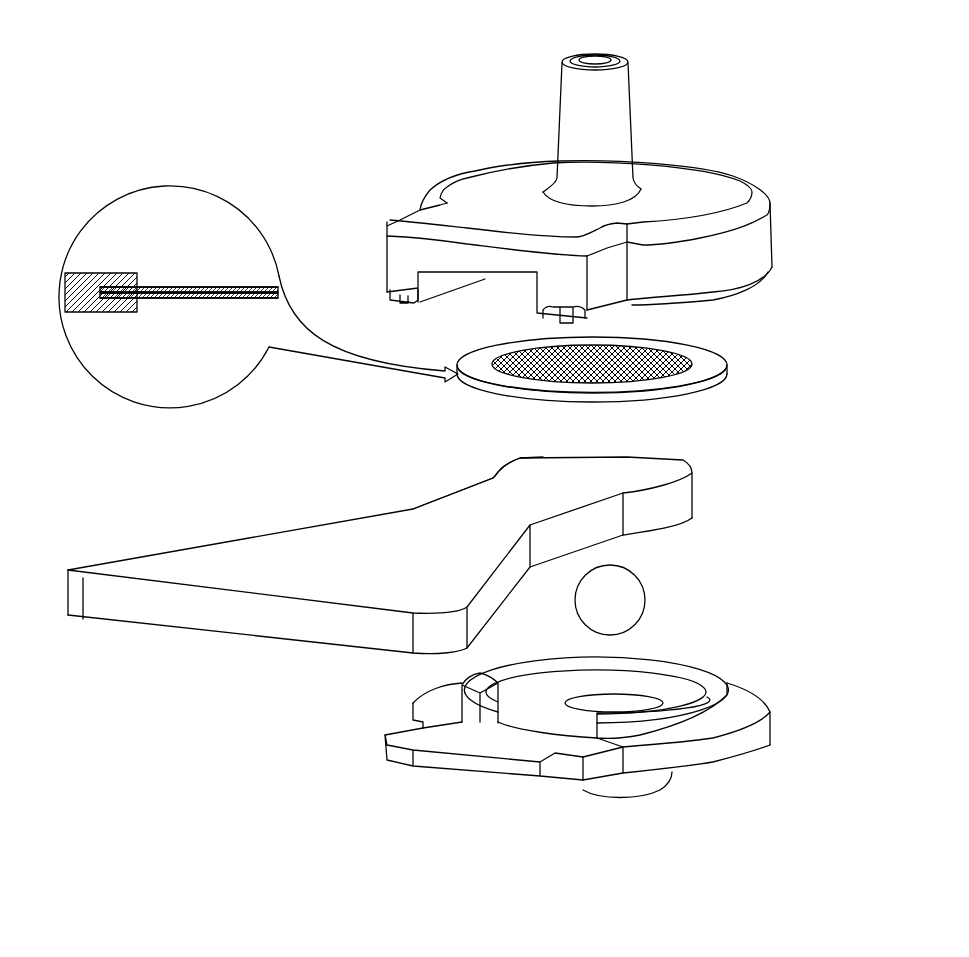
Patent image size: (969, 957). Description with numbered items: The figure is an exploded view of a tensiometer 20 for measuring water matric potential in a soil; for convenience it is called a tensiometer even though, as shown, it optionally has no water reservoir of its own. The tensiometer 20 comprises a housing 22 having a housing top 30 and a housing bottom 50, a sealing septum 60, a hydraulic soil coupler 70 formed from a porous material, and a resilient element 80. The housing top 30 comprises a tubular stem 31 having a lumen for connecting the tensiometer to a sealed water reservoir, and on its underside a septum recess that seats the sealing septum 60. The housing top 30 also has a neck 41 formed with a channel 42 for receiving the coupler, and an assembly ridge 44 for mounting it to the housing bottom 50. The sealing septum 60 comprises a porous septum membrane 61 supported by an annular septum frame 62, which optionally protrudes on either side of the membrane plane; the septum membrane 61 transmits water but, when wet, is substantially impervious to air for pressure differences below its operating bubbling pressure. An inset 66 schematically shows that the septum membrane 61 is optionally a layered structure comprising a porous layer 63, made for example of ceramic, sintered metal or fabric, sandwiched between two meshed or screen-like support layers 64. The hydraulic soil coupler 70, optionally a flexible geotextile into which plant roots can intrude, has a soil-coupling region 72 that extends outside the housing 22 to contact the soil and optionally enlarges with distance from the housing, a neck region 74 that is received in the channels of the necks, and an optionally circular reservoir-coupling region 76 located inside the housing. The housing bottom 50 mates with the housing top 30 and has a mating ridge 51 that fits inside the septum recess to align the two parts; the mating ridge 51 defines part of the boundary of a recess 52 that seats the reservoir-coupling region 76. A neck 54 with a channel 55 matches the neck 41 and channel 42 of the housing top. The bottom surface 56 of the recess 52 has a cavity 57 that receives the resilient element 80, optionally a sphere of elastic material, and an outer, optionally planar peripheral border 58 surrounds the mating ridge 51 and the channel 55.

The tensiometer 20 is at (229, 46).
The housing 22 is at (820, 172).
The housing top 30 is at (708, 77).
The tubular stem 31 is at (606, 118).
The neck 41 is at (401, 226).
The channel 42 is at (462, 314).
The assembly ridge 44 is at (570, 322).
The housing bottom 50 is at (774, 622).
The mating ridge 51 is at (710, 680).
The recess 52 is at (547, 680).
The neck 54 is at (603, 770).
The channel 55 is at (503, 745).
The bottom surface 56 is at (458, 671).
The cavity 57 is at (607, 700).
The peripheral border 58 is at (752, 702).
The sealing septum 60 is at (800, 333).
The septum membrane 61 is at (665, 350).
The septum frame 62 is at (705, 360).
The porous layer 63 is at (278, 287).
The support layers 64 is at (143, 290).
The inset 66 is at (131, 184).
The hydraulic soil coupler 70 is at (505, 400).
The soil-coupling region 72 is at (277, 542).
The neck region 74 is at (463, 503).
The reservoir-coupling region 76 is at (543, 468).
The resilient element 80 is at (622, 592).